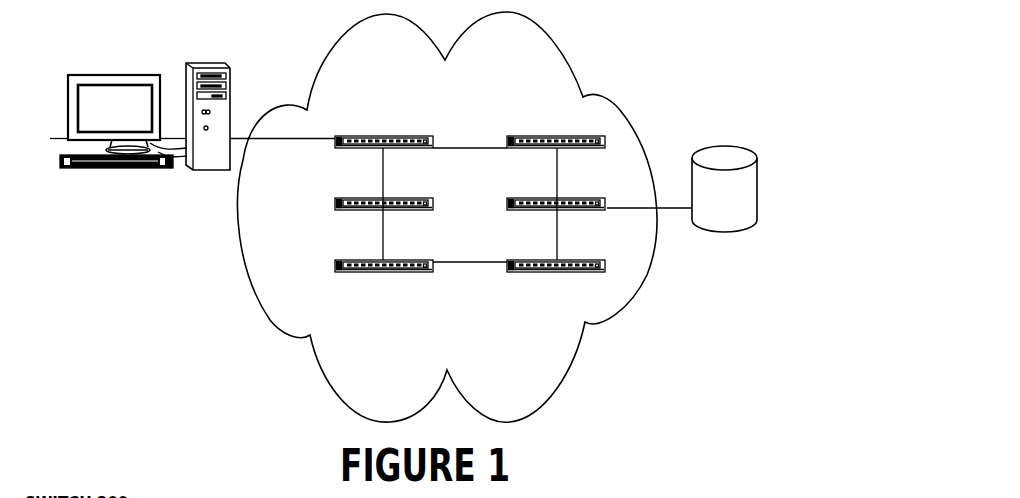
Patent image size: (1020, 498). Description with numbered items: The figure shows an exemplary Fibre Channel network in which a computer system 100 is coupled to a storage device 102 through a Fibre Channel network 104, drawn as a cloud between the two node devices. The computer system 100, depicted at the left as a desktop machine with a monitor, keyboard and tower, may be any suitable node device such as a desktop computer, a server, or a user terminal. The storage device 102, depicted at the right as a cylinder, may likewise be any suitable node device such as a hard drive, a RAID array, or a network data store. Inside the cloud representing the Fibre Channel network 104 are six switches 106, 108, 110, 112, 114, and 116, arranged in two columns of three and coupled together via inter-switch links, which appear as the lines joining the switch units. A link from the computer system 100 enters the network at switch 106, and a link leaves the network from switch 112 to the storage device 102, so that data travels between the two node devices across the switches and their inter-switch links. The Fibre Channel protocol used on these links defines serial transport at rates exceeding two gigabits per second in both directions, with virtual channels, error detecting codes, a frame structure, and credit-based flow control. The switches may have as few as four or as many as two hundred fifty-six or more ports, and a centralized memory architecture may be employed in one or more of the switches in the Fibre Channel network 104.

The computer system 100 is at (120, 172).
The storage device 102 is at (730, 233).
The Fibre Channel network 104 is at (240, 273).
The switch 106 is at (335, 149).
The switch 108 is at (507, 149).
The switch 110 is at (335, 210).
The switch 112 is at (507, 210).
The switch 114 is at (335, 272).
The switch 116 is at (507, 272).